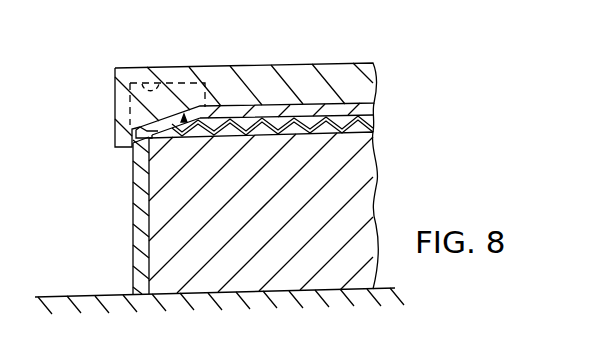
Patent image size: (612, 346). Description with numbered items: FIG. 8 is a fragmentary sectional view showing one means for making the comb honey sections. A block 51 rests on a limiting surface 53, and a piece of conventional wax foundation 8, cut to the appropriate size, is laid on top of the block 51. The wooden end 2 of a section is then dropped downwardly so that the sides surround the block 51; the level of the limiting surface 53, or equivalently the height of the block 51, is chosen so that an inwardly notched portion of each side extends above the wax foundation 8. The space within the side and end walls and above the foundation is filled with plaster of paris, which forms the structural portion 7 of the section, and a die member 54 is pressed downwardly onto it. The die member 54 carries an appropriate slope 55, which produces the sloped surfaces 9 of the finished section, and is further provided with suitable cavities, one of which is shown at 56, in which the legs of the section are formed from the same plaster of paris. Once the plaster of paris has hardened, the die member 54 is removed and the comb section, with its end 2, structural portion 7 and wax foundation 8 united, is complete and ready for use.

The end 2 is at (132, 198).
The structural portion 7 is at (275, 115).
The wax foundation 8 is at (315, 128).
The sloped surfaces 9 is at (147, 126).
The block 51 is at (345, 188).
The limiting surface 53 is at (107, 296).
The die member 54 is at (222, 78).
The slope 55 is at (117, 82).
The cavity 56 is at (137, 82).